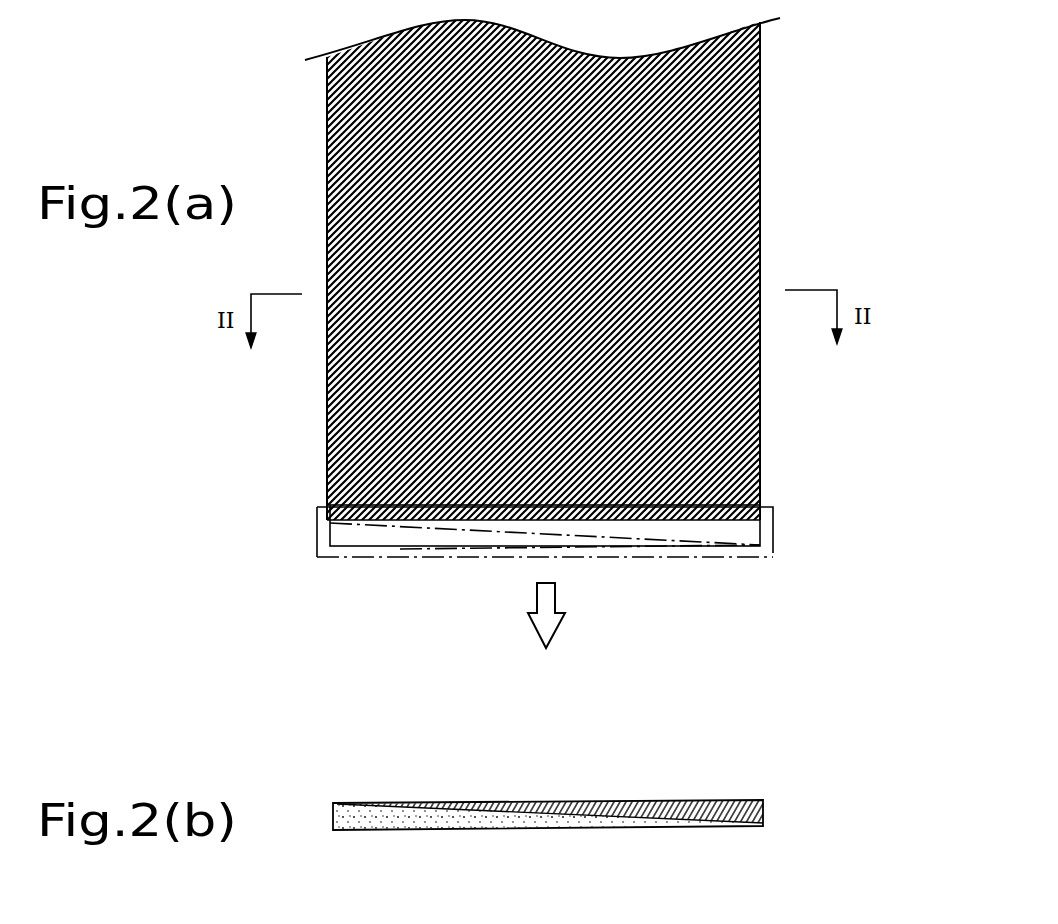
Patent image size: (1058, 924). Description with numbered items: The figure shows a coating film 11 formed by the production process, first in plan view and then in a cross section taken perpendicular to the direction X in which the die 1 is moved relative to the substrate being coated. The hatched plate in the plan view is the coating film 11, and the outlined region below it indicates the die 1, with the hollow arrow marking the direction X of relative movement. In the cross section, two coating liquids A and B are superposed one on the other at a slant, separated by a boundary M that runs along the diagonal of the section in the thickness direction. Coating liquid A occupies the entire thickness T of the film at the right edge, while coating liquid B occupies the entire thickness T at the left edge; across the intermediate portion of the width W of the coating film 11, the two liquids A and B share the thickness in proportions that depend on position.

In FIG. 2A, the coating film 11 is at (760, 177).
In FIG. 2A, the die 1 is at (775, 530).
In FIG. 2A, the direction of die movement X is at (546, 636).
In FIG. 2B, the width of the coating film W is at (763, 775).
In FIG. 2B, the thickness of the coating film T is at (789, 767).
In FIG. 2B, the coating liquid A is at (657, 818).
In FIG. 2B, the coating liquid B is at (436, 820).
In FIG. 2B, the boundary M is at (548, 815).